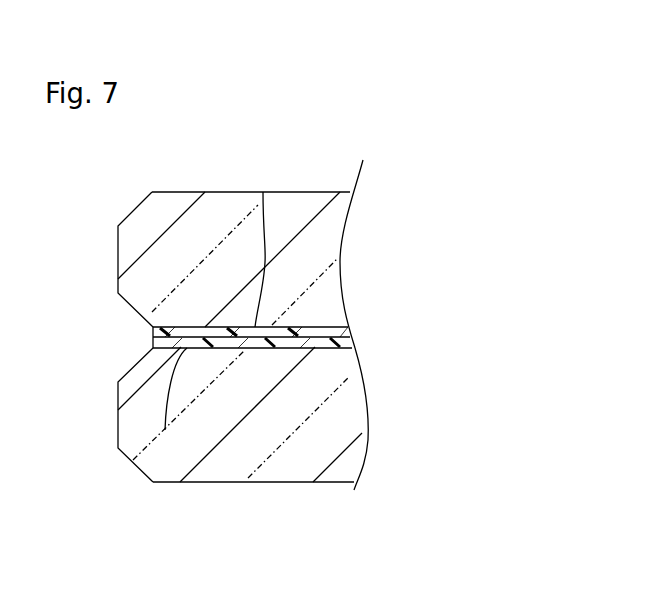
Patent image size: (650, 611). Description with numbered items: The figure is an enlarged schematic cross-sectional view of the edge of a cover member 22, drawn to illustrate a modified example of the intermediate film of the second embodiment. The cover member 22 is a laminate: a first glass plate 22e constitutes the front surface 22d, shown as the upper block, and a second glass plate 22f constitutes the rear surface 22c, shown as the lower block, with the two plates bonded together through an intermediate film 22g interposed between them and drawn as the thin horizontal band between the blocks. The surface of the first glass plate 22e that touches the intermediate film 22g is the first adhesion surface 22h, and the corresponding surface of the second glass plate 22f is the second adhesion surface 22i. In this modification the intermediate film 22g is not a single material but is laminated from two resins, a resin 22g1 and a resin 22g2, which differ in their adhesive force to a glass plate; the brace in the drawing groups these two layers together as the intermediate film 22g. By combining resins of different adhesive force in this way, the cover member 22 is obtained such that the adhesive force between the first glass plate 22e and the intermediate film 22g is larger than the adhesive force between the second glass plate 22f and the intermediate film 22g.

The cover member 22 is at (306, 335).
The rear surface 22c is at (243, 482).
The front surface 22d is at (215, 192).
The first glass plate 22e is at (330, 281).
The second glass plate 22f is at (346, 422).
The intermediate film 22g is at (323, 340).
The resin 22g1 is at (352, 333).
The resin 22g2 is at (352, 342).
The first adhesion surface 22h is at (263, 192).
The second adhesion surface 22i is at (165, 430).